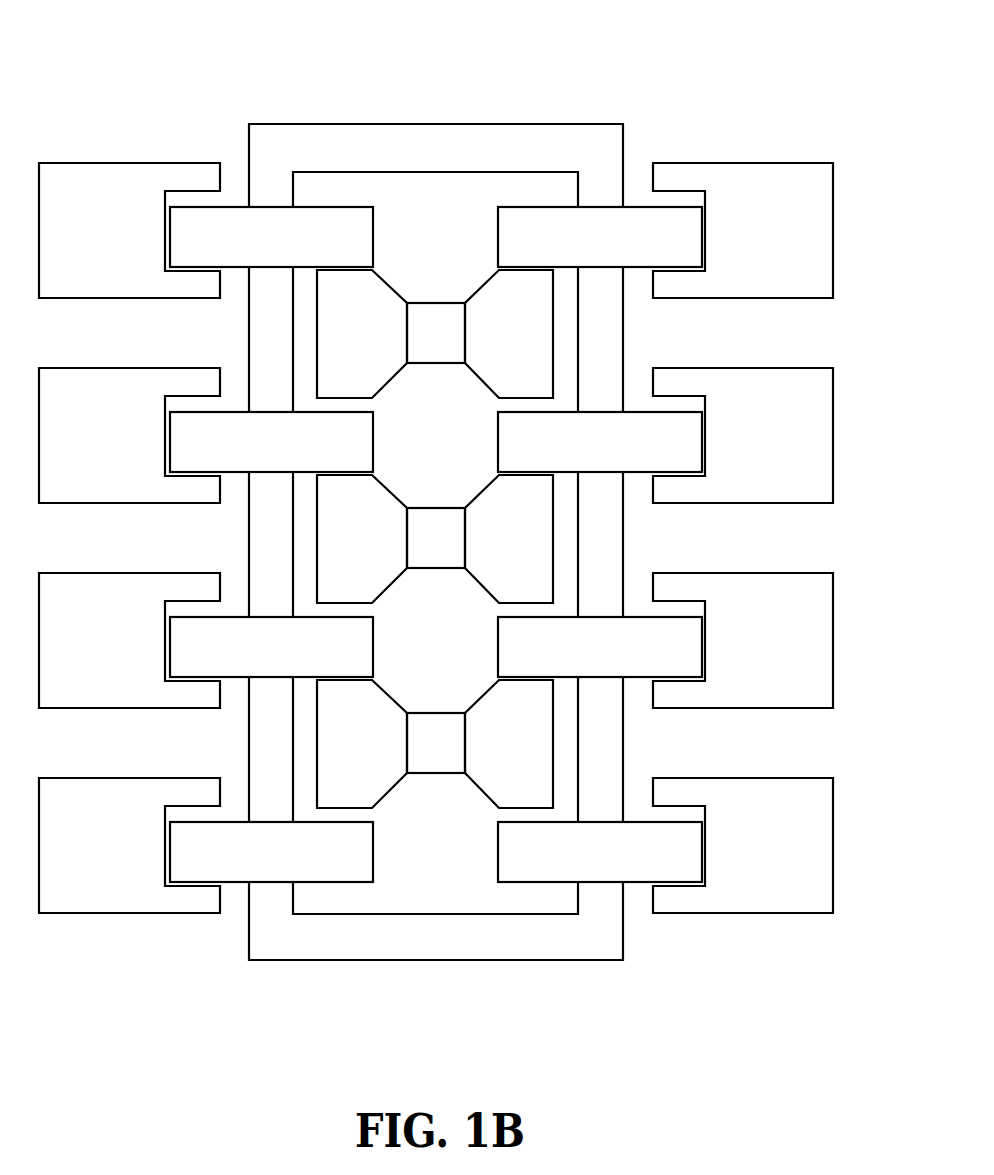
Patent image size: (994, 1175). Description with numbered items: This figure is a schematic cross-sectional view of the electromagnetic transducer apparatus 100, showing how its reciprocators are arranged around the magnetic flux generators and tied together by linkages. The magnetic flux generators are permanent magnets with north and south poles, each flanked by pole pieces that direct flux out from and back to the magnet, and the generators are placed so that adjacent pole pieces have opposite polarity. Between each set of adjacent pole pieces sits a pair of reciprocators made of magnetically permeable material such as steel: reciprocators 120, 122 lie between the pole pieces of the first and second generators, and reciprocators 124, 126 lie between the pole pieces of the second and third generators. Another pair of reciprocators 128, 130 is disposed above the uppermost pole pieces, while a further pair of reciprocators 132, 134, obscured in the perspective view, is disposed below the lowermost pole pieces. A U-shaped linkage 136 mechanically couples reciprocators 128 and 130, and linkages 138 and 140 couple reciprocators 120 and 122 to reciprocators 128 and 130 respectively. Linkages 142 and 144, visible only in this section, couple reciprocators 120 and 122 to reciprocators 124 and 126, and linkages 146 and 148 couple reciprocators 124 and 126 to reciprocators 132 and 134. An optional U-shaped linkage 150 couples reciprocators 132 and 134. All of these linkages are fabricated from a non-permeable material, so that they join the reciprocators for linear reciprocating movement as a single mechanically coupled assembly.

The electromagnetic transducer apparatus 100 is at (163, 67).
The reciprocator 120 is at (233, 412).
The reciprocator 122 is at (640, 412).
The reciprocator 124 is at (231, 617).
The reciprocator 126 is at (642, 617).
The reciprocator 128 is at (233, 207).
The reciprocator 130 is at (640, 207).
The reciprocator 132 is at (238, 882).
The reciprocator 134 is at (633, 882).
The U-shaped linkage 136 is at (438, 124).
The linkage 138 is at (248, 317).
The linkage 140 is at (623, 317).
The linkage 142 is at (248, 519).
The linkage 144 is at (623, 520).
The linkage 146 is at (249, 747).
The linkage 148 is at (623, 760).
The U-shaped linkage 150 is at (433, 960).